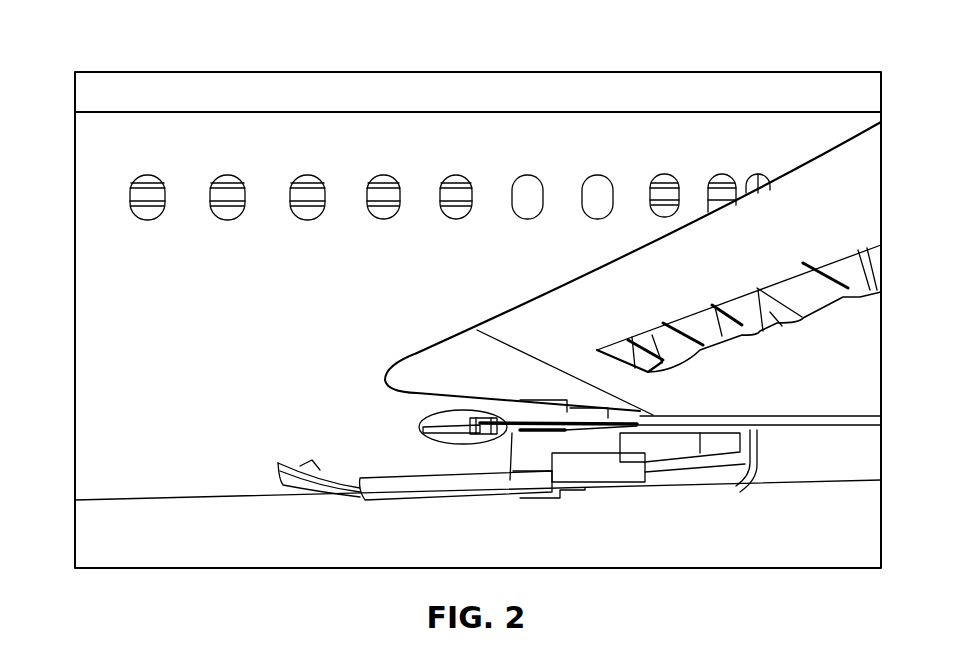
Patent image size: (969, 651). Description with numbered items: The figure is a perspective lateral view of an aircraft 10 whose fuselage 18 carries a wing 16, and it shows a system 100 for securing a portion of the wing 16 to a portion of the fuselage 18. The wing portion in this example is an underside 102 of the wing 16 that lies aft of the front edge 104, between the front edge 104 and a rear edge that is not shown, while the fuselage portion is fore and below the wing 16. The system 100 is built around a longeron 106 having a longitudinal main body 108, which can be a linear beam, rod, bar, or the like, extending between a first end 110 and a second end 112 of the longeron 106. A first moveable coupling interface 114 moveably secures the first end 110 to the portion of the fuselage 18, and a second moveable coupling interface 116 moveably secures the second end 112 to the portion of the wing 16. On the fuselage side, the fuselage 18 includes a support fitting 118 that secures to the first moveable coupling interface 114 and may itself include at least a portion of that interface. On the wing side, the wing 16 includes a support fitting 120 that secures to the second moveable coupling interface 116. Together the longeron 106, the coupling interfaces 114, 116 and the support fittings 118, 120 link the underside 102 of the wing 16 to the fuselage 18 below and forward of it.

The aircraft 10 is at (85, 68).
The wing 16 is at (865, 188).
The fuselage 18 is at (197, 430).
The system 100 is at (523, 436).
The underside 102 is at (602, 430).
The front edge 104 is at (430, 367).
The longeron 106 is at (542, 440).
The main body 108 is at (535, 420).
The first end 110 is at (503, 420).
The second end 112 is at (575, 420).
The first moveable coupling interface 114 is at (484, 438).
The second moveable coupling interface 116 is at (577, 430).
The support fitting 118 is at (443, 427).
The support fitting 120 is at (578, 430).